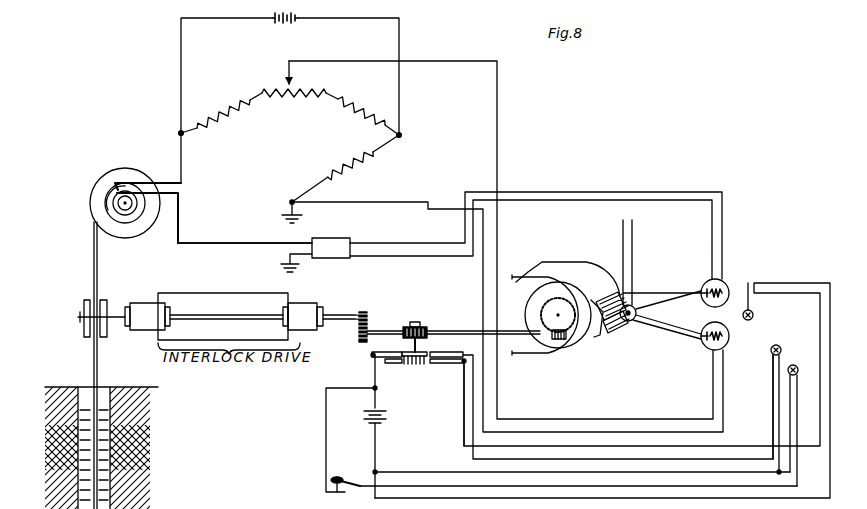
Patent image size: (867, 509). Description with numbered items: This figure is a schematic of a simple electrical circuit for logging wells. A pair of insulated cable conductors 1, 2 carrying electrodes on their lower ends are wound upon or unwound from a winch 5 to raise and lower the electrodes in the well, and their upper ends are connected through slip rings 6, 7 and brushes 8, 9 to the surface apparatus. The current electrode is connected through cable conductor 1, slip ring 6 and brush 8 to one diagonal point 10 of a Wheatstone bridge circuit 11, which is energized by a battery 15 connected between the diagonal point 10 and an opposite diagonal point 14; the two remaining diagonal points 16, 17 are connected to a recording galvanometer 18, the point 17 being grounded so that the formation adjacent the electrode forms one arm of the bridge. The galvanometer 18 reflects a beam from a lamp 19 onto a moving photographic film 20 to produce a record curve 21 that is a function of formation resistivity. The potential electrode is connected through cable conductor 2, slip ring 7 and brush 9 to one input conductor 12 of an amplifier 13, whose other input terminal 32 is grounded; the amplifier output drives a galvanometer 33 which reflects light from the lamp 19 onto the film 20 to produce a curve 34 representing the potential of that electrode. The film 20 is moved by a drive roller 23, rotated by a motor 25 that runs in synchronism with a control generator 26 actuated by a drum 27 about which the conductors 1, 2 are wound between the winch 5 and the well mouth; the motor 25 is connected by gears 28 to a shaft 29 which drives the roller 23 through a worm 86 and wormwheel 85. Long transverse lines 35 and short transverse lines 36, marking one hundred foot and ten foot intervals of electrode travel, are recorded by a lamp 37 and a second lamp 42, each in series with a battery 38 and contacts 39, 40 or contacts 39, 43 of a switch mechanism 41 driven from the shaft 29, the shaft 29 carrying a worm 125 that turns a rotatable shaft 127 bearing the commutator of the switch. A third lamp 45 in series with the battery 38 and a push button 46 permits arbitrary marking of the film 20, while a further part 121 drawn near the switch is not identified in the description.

The cable conductor 1 is at (93, 368).
The cable conductor 2 is at (99, 368).
The winch 5 is at (117, 166).
The slip ring 6 is at (106, 193).
The slip ring 7 is at (116, 205).
The brush 8 is at (166, 172).
The brush 9 is at (176, 196).
The diagonal point 10 is at (180, 132).
The Wheatstone bridge circuit 11 is at (290, 114).
The input conductor 12 is at (232, 243).
The amplifier 13 is at (343, 227).
The diagonal point 14 is at (401, 135).
The battery 15 is at (289, 23).
The diagonal point 16 is at (293, 86).
The diagonal point 17 is at (291, 200).
The recording galvanometer 18 is at (705, 348).
The lamp 19 is at (628, 322).
The photographic film 20 is at (584, 251).
The record curve 21 is at (597, 336).
The drive roller 23 is at (526, 306).
The motor 25 is at (320, 297).
The control generator 26 is at (146, 303).
The drum 27 is at (86, 300).
The gears 28 is at (368, 316).
The shaft 29 is at (456, 331).
The input terminal 32 is at (289, 263).
The galvanometer 33 is at (722, 283).
The curve 34 is at (627, 293).
The long transverse lines 35 is at (605, 302).
The short transverse lines 36 is at (612, 330).
The lamp 37 is at (779, 345).
The battery 38 is at (386, 412).
The contact 39 is at (380, 359).
The contact 40 is at (448, 348).
The switch mechanism 41 is at (426, 366).
The second lamp 42 is at (753, 314).
The contact 43 is at (462, 366).
The third lamp 45 is at (797, 358).
The push button 46 is at (348, 463).
The wormwheel 85 is at (562, 298).
The worm 86 is at (555, 340).
The contact 121 is at (407, 327).
The worm 125 is at (422, 327).
The rotatable shaft 127 is at (412, 346).